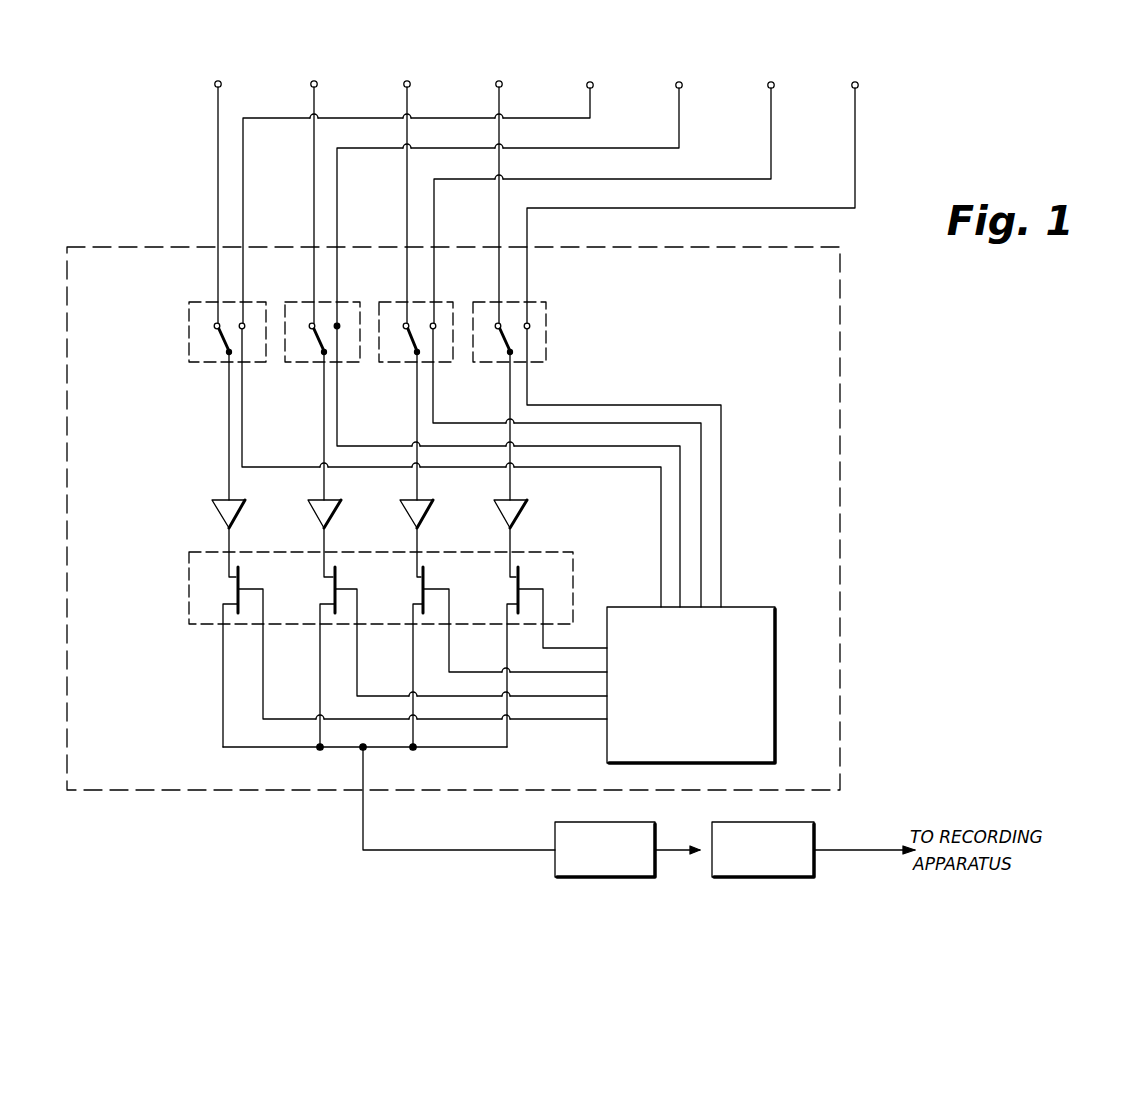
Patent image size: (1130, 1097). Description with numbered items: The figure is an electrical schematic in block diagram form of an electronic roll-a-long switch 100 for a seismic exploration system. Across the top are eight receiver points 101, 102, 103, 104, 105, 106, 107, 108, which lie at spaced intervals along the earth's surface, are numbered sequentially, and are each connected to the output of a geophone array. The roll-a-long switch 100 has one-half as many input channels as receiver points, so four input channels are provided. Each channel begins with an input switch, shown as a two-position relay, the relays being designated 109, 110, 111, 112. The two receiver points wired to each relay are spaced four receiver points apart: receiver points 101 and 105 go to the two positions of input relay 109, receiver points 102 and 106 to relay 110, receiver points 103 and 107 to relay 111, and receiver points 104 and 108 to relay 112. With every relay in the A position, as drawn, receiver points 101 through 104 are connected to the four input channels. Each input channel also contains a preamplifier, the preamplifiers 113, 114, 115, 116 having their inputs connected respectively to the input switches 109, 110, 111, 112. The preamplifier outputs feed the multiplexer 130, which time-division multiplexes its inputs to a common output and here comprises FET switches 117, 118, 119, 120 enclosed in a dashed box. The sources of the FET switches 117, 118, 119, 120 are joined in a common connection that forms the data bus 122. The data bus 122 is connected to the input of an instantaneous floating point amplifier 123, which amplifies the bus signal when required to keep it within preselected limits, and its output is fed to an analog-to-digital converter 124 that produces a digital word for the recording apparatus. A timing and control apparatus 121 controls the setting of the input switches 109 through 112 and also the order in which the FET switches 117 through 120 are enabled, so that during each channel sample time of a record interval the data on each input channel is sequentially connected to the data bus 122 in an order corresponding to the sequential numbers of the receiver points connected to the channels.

The electronic roll-a-long switch 100 is at (842, 527).
The receiver point 101 is at (213, 190).
The receiver point 102 is at (312, 190).
The receiver point 103 is at (406, 190).
The receiver point 104 is at (500, 190).
The receiver point 105 is at (425, 190).
The receiver point 106 is at (517, 190).
The receiver point 107 is at (612, 190).
The receiver point 108 is at (700, 190).
The input switch 109 is at (187, 363).
The input switch 110 is at (348, 300).
The input switch 111 is at (444, 300).
The input switch 112 is at (548, 343).
The preamplifier 113 is at (216, 510).
The preamplifier 114 is at (314, 512).
The preamplifier 115 is at (410, 512).
The preamplifier 116 is at (516, 520).
The FET switch 117 is at (240, 582).
The FET switch 118 is at (337, 582).
The FET switch 119 is at (426, 582).
The FET switch 120 is at (520, 583).
The timing and control apparatus 121 is at (777, 626).
The data bus 122 is at (458, 750).
The instantaneous floating point amplifier 123 is at (620, 878).
The analog-to-digital converter 124 is at (793, 878).
The multiplexer 130 is at (186, 598).